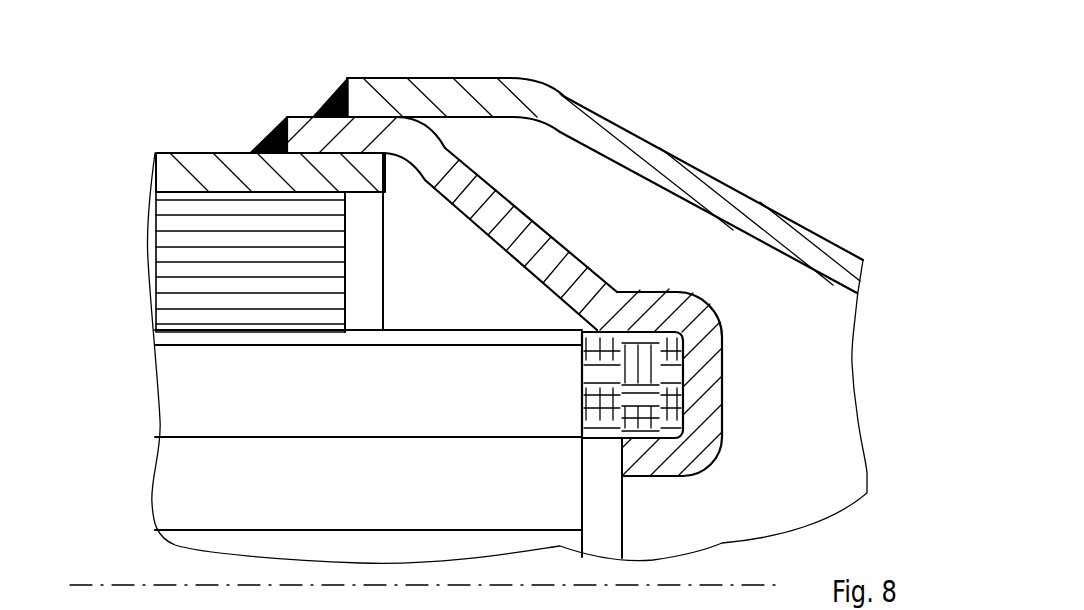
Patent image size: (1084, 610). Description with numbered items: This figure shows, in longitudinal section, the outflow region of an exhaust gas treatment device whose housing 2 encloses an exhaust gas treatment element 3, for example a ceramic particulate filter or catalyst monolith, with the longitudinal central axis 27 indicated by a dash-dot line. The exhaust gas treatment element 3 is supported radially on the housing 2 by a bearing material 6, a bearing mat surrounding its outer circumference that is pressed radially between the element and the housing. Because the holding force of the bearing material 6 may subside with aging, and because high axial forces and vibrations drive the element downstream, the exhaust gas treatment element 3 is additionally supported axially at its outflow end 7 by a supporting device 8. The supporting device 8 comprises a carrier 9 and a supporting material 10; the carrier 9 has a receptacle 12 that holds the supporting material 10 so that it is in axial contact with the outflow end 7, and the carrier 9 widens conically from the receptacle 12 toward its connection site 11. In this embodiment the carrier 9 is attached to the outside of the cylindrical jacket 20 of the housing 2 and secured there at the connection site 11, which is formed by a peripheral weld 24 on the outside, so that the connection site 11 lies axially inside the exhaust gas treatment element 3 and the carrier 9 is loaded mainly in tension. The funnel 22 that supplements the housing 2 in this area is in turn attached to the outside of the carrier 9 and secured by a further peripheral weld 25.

The housing 2 is at (240, 124).
The exhaust gas treatment element 3 is at (460, 494).
The bearing material 6 is at (178, 253).
The outflow end 7 is at (583, 510).
The supporting device 8 is at (748, 383).
The carrier 9 is at (546, 265).
The supporting material 10 is at (549, 347).
The connection site 11 is at (258, 97).
The receptacle 12 is at (580, 392).
The jacket 20 is at (200, 167).
The funnel 22 is at (731, 204).
The peripheral weld 24 is at (250, 152).
The peripheral weld 25 is at (336, 96).
The longitudinal central axis 27 is at (122, 583).